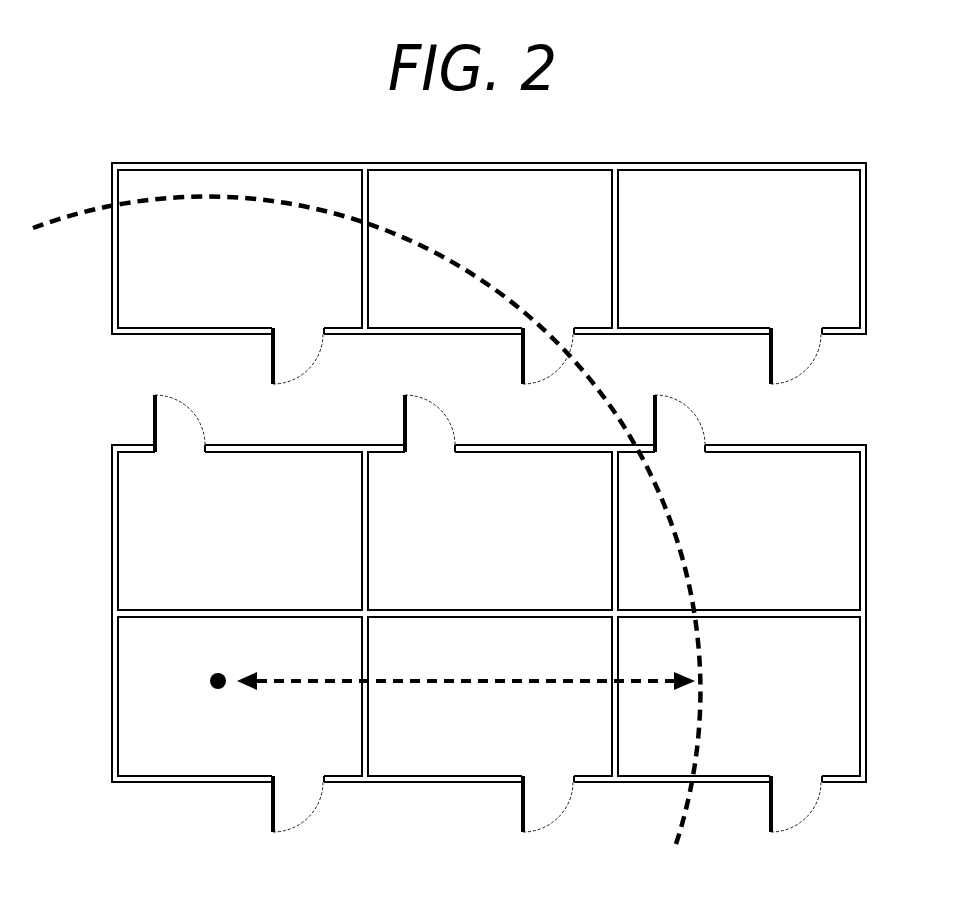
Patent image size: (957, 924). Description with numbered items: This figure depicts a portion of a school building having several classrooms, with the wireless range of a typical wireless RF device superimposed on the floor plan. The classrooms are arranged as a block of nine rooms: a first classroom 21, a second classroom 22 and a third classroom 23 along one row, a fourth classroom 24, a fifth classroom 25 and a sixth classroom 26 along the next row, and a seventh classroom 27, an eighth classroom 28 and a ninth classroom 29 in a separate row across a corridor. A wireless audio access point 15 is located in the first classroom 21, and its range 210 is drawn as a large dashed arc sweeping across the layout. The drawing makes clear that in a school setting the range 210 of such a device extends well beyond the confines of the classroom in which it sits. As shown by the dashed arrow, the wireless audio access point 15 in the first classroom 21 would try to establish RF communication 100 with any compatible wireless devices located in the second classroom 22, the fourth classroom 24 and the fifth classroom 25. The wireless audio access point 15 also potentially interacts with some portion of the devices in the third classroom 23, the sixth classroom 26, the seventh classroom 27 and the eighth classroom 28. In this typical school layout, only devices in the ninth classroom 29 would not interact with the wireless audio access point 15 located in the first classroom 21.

The wireless audio access point 15 is at (217, 676).
The first classroom 21 is at (172, 757).
The second classroom 22 is at (421, 757).
The third classroom 23 is at (844, 757).
The fourth classroom 24 is at (172, 596).
The fifth classroom 25 is at (421, 596).
The sixth classroom 26 is at (844, 596).
The seventh classroom 27 is at (172, 316).
The eighth classroom 28 is at (421, 316).
The ninth classroom 29 is at (844, 316).
The RF communication 100 is at (594, 683).
The range 210 is at (683, 822).